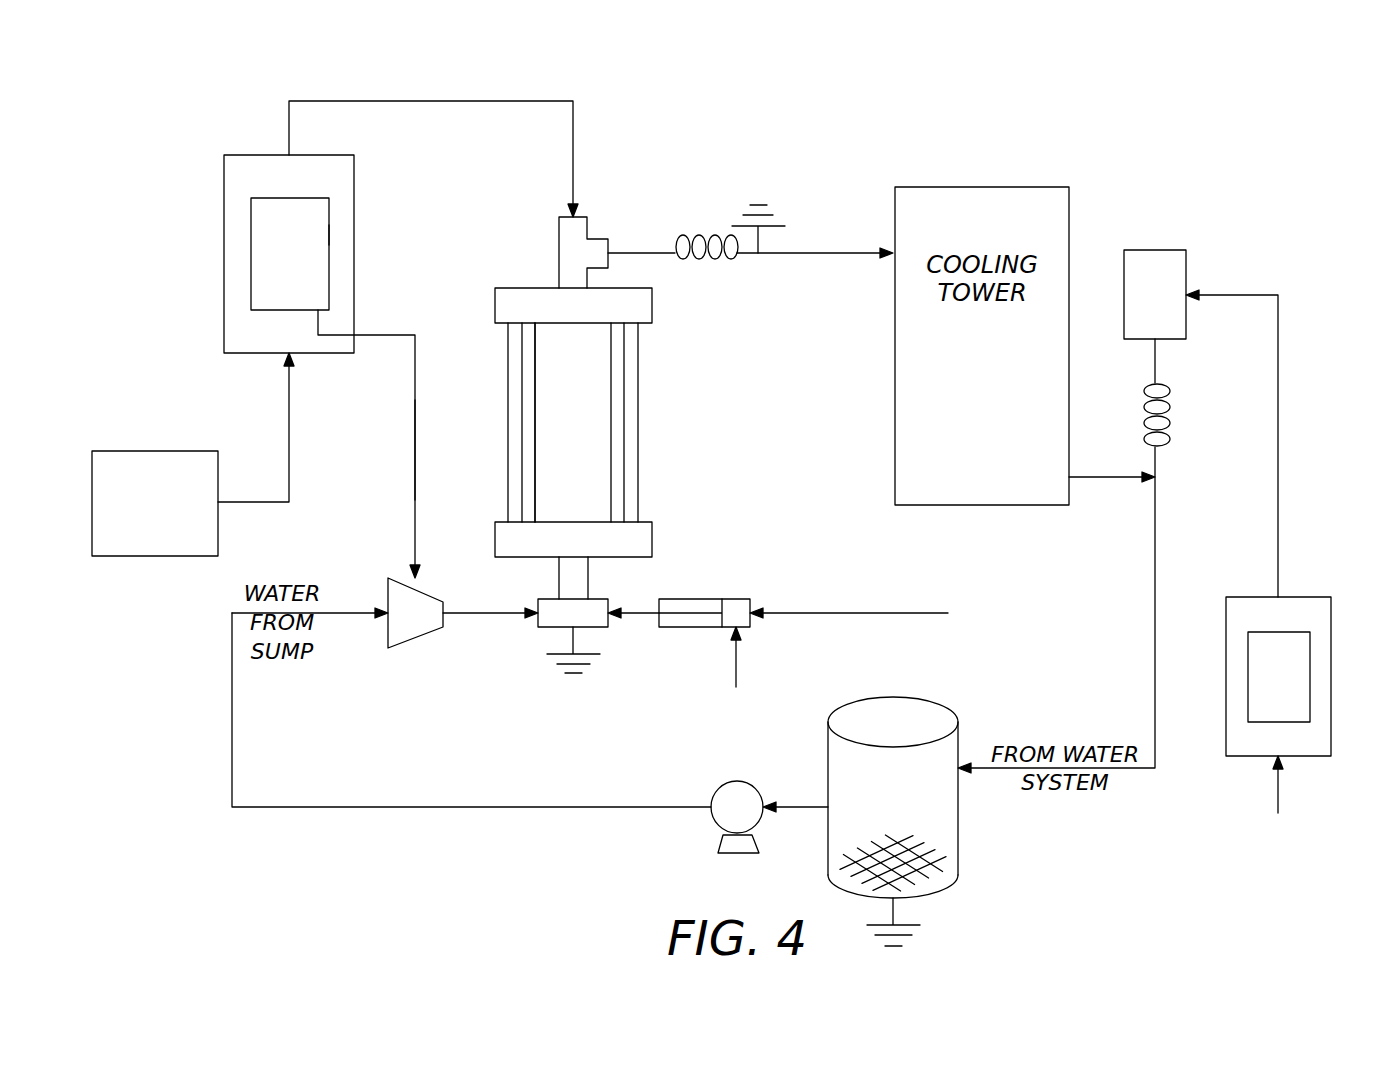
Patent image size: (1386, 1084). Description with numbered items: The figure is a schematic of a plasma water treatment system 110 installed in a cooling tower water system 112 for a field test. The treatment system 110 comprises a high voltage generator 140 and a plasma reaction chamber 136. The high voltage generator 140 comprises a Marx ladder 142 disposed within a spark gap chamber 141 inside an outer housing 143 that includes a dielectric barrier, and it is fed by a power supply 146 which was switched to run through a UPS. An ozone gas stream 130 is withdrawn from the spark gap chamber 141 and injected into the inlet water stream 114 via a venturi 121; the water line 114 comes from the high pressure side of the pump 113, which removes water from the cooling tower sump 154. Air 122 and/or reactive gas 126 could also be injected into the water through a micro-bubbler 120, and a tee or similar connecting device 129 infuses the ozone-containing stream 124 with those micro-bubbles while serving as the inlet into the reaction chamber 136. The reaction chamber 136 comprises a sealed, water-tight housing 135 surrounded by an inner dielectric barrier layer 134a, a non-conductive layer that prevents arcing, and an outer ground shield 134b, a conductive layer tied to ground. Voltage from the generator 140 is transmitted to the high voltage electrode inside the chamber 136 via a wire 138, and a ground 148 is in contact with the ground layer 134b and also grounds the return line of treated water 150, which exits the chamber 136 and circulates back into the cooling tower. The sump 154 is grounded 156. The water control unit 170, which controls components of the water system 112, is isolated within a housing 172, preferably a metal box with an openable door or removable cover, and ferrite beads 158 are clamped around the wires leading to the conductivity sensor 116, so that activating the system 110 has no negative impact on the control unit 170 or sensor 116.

The plasma water treatment system 110 is at (195, 88).
The cooling tower water system 112 is at (1060, 850).
The pump 113 is at (713, 833).
The inlet water stream 114 is at (347, 613).
The conductivity sensor 116 is at (1155, 250).
The micro-bubbler 120 is at (737, 599).
The venturi 121 is at (417, 637).
The air 122 is at (736, 655).
The stream containing ozone 124 is at (487, 613).
The reactive gas 126 is at (908, 613).
The connecting device 129 is at (588, 580).
The ozone gas stream 130 is at (415, 462).
The inner dielectric barrier layer 134a is at (611, 472).
The outer ground shield 134b is at (522, 425).
The housing 135 is at (597, 398).
The plasma reaction chamber 136 is at (602, 351).
The wire 138 is at (577, 157).
The high voltage generator 140 is at (346, 323).
The spark gap chamber 141 is at (330, 234).
The Marx ladder 142 is at (262, 231).
The outer housing 143 is at (354, 275).
The power supply 146 is at (152, 556).
The ground 148 is at (702, 240).
The treated water 150 is at (817, 253).
The sump 154 is at (958, 850).
The sump ground 156 is at (905, 930).
The ferrite beads 158 is at (1170, 420).
The water control unit 170 is at (1258, 642).
The housing 172 is at (1300, 597).